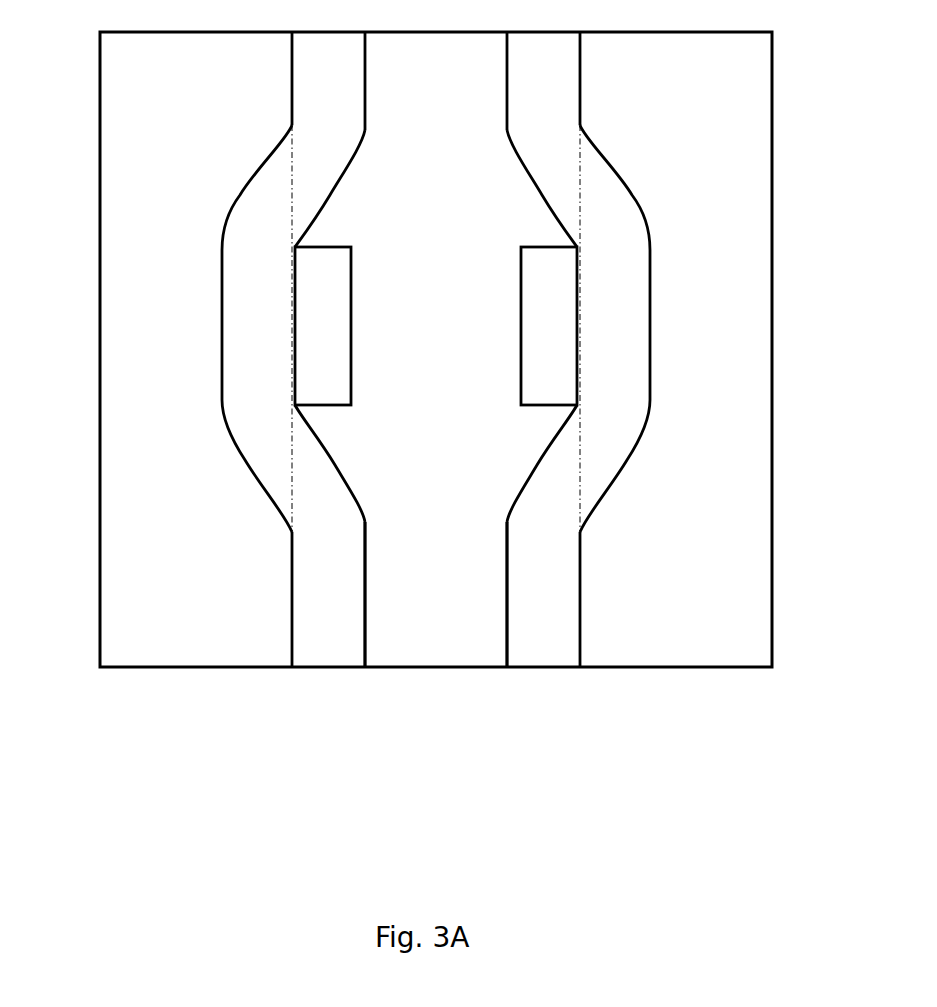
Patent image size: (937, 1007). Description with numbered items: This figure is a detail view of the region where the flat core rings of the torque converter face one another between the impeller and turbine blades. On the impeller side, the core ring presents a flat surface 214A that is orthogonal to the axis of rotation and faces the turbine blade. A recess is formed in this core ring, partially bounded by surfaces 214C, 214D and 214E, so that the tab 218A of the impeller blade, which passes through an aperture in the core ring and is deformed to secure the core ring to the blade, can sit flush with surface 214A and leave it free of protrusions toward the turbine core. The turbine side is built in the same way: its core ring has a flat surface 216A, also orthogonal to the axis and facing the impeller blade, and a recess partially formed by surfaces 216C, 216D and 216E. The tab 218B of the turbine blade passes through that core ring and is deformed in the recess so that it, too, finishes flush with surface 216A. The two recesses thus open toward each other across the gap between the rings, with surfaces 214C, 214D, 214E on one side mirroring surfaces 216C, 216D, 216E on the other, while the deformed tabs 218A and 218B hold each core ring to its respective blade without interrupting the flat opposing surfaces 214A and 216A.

The surface 214A is at (677, 594).
The surface 214C is at (686, 326).
The surface 214D is at (688, 416).
The surface 214E is at (688, 212).
The surface 216A is at (362, 576).
The surface 216C is at (297, 313).
The surface 216D is at (322, 450).
The surface 216E is at (325, 205).
The tab 218A is at (715, 328).
The tab 218B is at (286, 288).